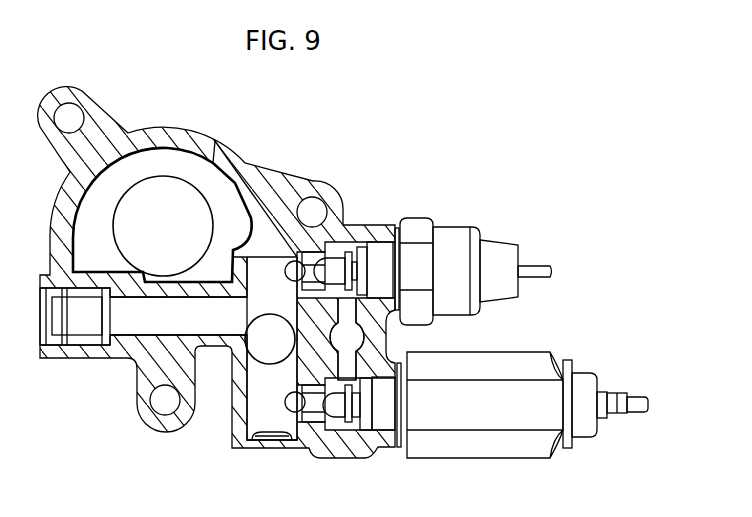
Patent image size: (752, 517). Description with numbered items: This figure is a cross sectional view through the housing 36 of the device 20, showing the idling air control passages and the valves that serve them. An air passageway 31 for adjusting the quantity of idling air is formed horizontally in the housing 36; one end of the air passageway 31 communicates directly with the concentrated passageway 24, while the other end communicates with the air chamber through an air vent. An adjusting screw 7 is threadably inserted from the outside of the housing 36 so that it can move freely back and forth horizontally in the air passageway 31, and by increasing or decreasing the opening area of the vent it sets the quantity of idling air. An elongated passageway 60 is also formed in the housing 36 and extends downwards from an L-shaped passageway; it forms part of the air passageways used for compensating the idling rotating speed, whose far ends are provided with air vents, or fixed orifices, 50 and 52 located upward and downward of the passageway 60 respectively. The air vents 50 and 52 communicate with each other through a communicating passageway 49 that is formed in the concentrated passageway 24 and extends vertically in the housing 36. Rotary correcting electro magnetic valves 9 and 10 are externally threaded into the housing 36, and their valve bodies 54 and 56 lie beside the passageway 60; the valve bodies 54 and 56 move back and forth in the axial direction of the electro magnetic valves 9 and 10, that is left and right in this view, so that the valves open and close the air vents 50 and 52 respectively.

The valve housing 20 is at (304, 166).
The housing 36 is at (215, 148).
The adjusting screw 7 is at (88, 332).
The air passageway 31 is at (173, 327).
The concentrated passageway 24 is at (260, 343).
The communicating passageway 49 is at (257, 402).
The air vent 50 is at (312, 248).
The valve body 54 is at (337, 260).
The rotary correcting electro magnetic valve 9 is at (447, 232).
The elongated passageway 60 is at (352, 363).
The air vent 52 is at (318, 418).
The valve body 56 is at (337, 408).
The rotary correcting electro magnetic valve 10 is at (492, 420).